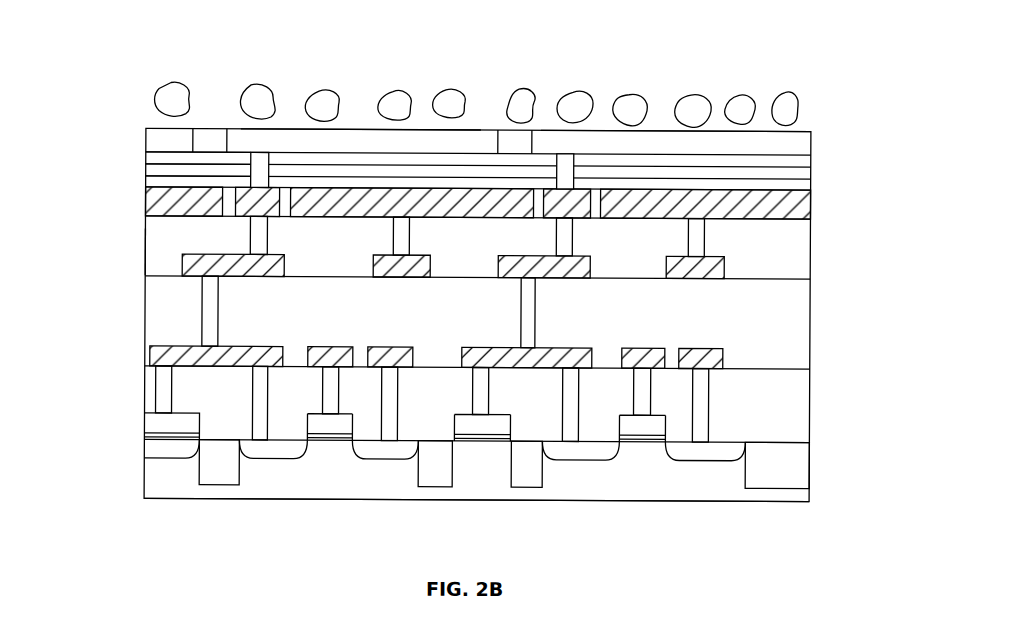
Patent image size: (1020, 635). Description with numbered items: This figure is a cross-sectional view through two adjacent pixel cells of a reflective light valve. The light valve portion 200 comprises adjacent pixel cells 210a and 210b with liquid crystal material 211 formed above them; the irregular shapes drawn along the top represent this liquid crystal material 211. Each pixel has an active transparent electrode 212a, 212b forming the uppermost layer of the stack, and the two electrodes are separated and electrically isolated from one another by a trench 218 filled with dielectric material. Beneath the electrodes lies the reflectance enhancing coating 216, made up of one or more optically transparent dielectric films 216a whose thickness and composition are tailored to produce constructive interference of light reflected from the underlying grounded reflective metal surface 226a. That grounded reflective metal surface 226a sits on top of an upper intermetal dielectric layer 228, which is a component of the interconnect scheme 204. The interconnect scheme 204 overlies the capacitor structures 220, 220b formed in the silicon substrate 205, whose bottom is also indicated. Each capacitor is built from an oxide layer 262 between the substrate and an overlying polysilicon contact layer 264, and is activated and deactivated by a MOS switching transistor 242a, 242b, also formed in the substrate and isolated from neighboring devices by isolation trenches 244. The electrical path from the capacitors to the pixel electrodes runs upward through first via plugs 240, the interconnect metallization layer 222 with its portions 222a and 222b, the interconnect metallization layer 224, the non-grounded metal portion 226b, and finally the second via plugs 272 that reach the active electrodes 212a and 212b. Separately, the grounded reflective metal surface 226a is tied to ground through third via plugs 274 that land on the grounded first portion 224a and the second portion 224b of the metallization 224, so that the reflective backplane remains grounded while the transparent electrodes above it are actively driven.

The light valve portion 200 is at (150, 449).
The interconnect scheme 204 is at (814, 226).
The silicon substrate 205 is at (800, 499).
The pixel cell 210a is at (355, 112).
The pixel cell 210b is at (650, 111).
The liquid crystal material 211 is at (783, 103).
The active transparent electrode 212a is at (418, 128).
The active transparent electrode 212b is at (793, 142).
The reflectance enhancing coating 216 is at (818, 143).
The optically transparent dielectric film 216a is at (145, 155).
The trench 218 is at (205, 138).
The capacitor structure 220 is at (158, 475).
The capacitor structure 220b is at (484, 480).
The middle interconnect metallization layer 222 is at (243, 353).
The middle interconnect metallization portion 222a is at (328, 353).
The middle interconnect metallization portion 222b is at (386, 353).
The interconnect metallization layer 224 is at (588, 273).
The grounded first portion of interconnect metallization 224a is at (278, 269).
The second portion of interconnect metallization 224b is at (428, 269).
The grounded reflective metal surface 226a is at (482, 212).
The non-grounded metal portion 226b is at (273, 213).
The upper intermetal dielectric layer 228 is at (150, 242).
The first via plug 240 is at (250, 243).
The MOS switching transistor 242a is at (333, 470).
The MOS switching transistor 242b is at (643, 472).
The isolation trench 244 is at (217, 475).
The oxide layer 262 is at (150, 434).
The polysilicon contact layer 264 is at (150, 423).
The second via plug 272 is at (258, 162).
The third via plug 274 is at (409, 240).